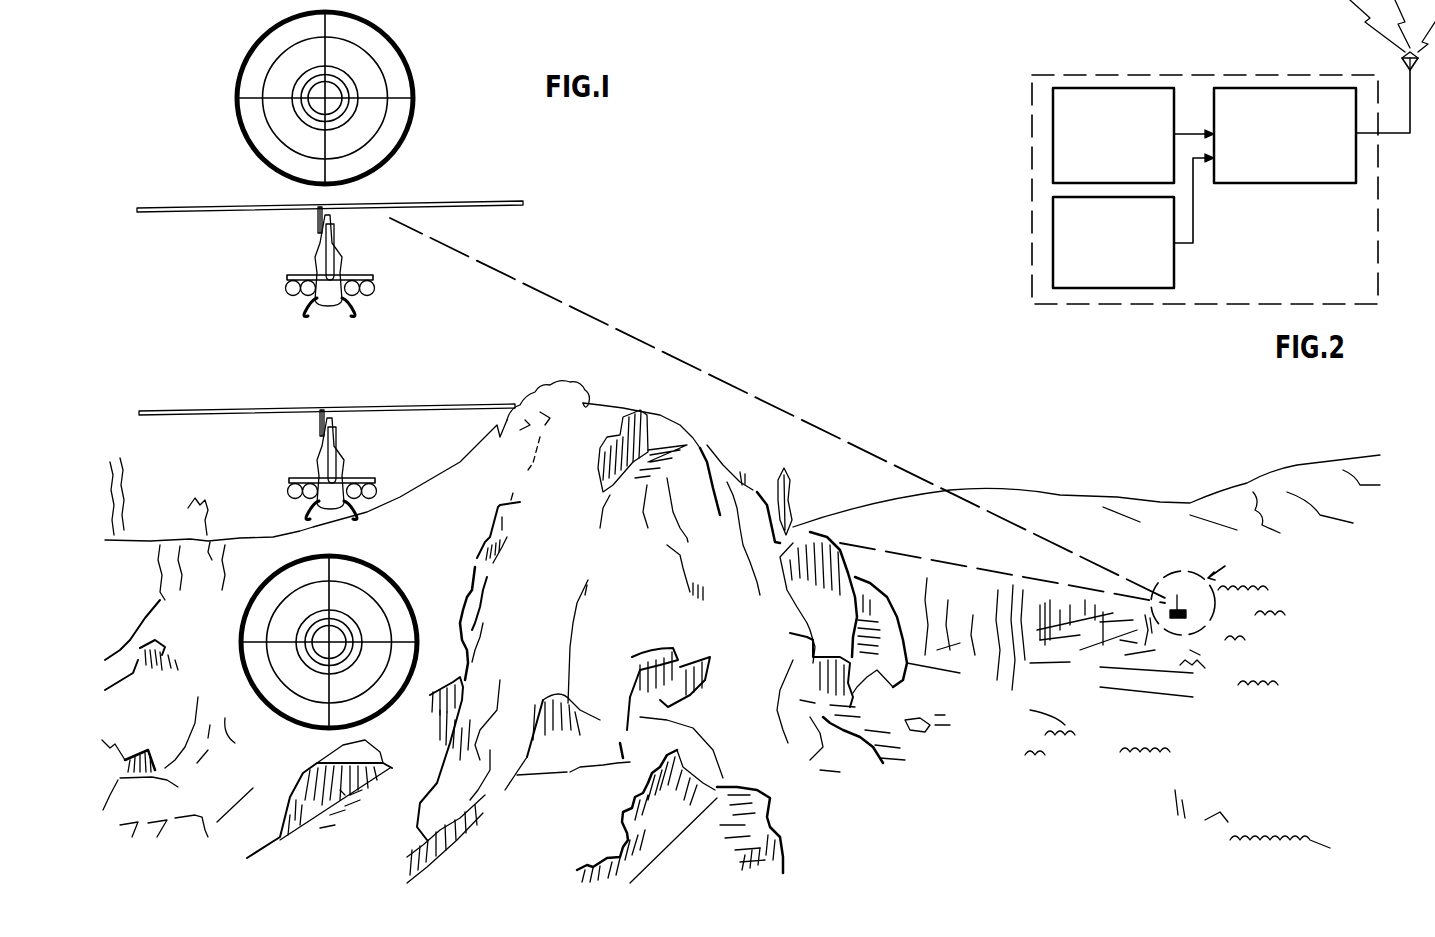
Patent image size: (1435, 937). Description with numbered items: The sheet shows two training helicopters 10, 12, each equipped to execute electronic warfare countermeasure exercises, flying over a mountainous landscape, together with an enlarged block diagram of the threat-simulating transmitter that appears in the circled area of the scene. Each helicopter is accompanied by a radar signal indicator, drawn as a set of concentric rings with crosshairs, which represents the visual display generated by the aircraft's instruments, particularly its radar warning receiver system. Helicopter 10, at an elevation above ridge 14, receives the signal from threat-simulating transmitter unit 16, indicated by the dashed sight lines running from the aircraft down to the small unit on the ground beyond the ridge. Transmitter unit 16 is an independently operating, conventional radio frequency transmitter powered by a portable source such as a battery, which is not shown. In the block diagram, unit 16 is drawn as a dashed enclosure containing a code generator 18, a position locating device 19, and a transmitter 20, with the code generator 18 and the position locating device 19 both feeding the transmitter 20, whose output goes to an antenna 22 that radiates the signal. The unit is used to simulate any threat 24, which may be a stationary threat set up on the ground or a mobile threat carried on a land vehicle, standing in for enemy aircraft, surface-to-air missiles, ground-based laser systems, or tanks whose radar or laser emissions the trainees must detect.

In FIG. 1, the helicopter 10 is at (380, 283).
In FIG. 1, the helicopter 12 is at (342, 471).
In FIG. 1, the ridge 14 is at (567, 572).
In FIG. 2, the threat-simulating transmitter unit 16 is at (1050, 305).
In FIG. 2, the code generator 18 is at (1125, 88).
In FIG. 2, the position locating device 19 is at (1152, 290).
In FIG. 2, the transmitter 20 is at (1300, 88).
In FIG. 2, the antenna 22 is at (1416, 66).
In FIG. 2, the threat 24 is at (1022, 145).